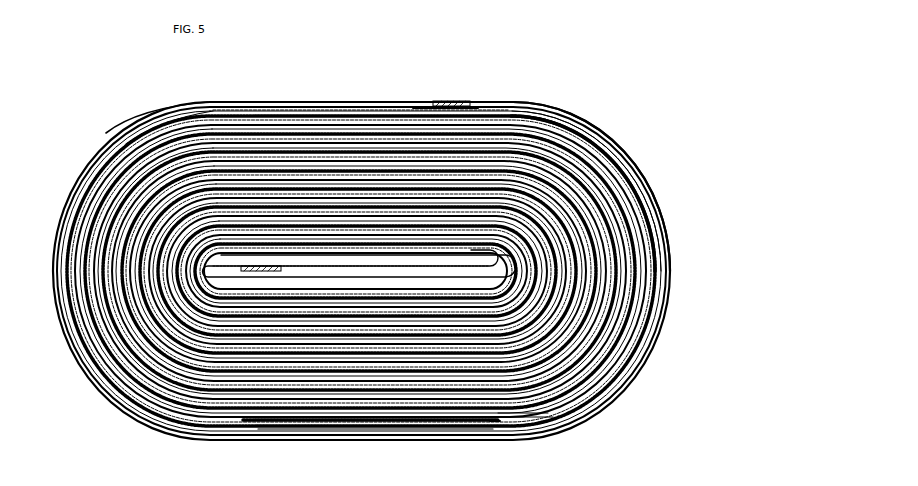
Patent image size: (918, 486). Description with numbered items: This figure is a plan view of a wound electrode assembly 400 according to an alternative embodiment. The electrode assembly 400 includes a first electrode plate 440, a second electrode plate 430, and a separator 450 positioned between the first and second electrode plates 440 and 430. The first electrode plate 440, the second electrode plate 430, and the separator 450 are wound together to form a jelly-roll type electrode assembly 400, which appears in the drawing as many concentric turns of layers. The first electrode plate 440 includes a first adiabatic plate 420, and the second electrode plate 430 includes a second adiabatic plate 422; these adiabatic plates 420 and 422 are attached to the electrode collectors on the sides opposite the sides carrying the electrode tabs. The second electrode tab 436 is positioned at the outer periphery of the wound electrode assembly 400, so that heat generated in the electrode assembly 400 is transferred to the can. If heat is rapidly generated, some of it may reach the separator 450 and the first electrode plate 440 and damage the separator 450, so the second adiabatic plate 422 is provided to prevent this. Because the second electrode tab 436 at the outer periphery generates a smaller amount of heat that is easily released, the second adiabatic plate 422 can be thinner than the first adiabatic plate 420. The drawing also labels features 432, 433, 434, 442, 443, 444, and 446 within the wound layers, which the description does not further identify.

The electrode assembly 400 is at (680, 116).
The first adiabatic plate 420 is at (255, 256).
The second adiabatic plate 422 is at (416, 97).
The second electrode plate 430 is at (200, 101).
The first electrode plate 432 is at (545, 128).
The second electrode uncoated portion 433 is at (491, 98).
The second separator 434 is at (575, 132).
The second electrode tab 436 is at (445, 92).
The first electrode plate 440 is at (520, 420).
The active material layer 442 is at (453, 416).
The electrode plate end 443 is at (513, 416).
The current collector 444 is at (353, 422).
The first electrode plate inner end 446 is at (276, 263).
The separator 450 is at (525, 93).